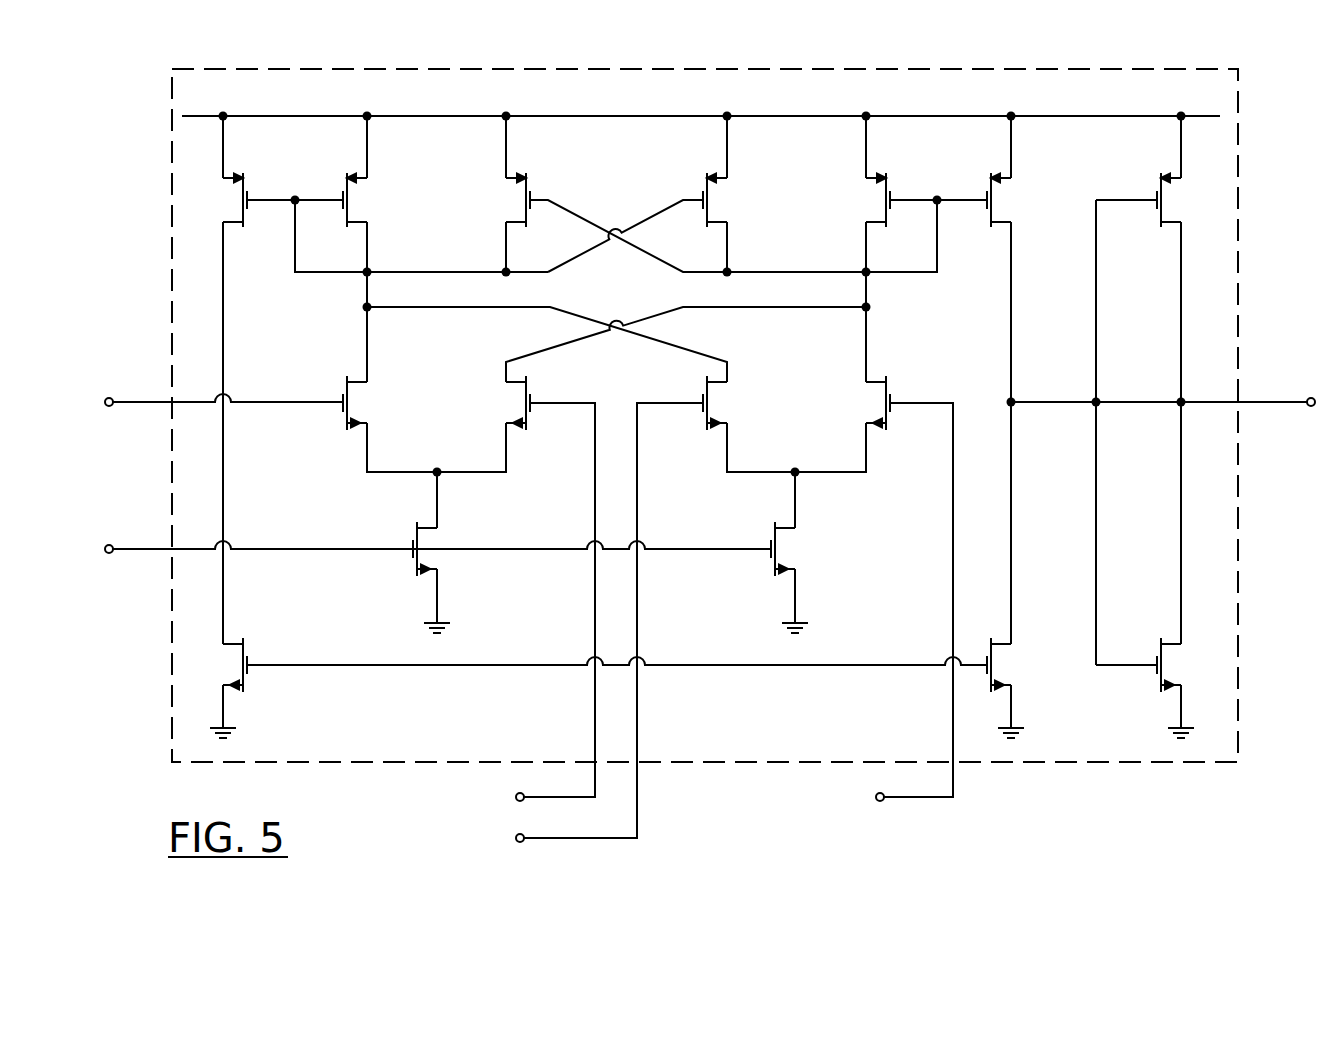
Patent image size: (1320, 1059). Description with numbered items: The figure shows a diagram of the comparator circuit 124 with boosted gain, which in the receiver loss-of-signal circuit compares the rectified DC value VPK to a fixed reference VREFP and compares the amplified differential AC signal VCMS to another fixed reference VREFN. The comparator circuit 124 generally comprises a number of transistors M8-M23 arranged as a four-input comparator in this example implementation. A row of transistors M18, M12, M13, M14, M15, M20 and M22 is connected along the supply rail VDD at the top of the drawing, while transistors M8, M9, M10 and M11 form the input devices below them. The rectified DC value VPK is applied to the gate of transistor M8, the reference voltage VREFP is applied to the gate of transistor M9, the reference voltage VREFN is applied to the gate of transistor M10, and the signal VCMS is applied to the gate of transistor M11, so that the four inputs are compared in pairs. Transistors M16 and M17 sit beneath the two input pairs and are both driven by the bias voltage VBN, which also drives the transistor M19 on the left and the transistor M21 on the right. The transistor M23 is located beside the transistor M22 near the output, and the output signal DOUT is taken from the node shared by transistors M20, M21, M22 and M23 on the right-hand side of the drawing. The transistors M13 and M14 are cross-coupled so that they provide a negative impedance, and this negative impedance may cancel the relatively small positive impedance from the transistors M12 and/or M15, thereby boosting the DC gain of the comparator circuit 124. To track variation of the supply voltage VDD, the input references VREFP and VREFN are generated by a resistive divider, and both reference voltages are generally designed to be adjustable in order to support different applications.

The comparator circuit 124 is at (222, 68).
The transistor M8 is at (369, 403).
The transistor M9 is at (504, 403).
The transistor M10 is at (734, 403).
The transistor M11 is at (857, 403).
The transistor M12 is at (375, 200).
The transistor M13 is at (499, 200).
The transistor M14 is at (735, 200).
The transistor M15 is at (858, 200).
The transistor M16 is at (453, 546).
The transistor M17 is at (802, 549).
The transistor M18 is at (216, 200).
The transistor M19 is at (216, 665).
The transistor M20 is at (1019, 200).
The transistor M21 is at (1017, 665).
The transistor M22 is at (1190, 200).
The transistor M23 is at (1188, 665).
The supply voltage VDD is at (701, 102).
The rectified DC value VPK is at (224, 387).
The bias voltage input VBN is at (438, 534).
The reference voltage VREFP is at (516, 606).
The reference voltage VREFN is at (569, 626).
The amplified differential AC signal VCMS is at (880, 605).
The digital output DOUT is at (1163, 387).